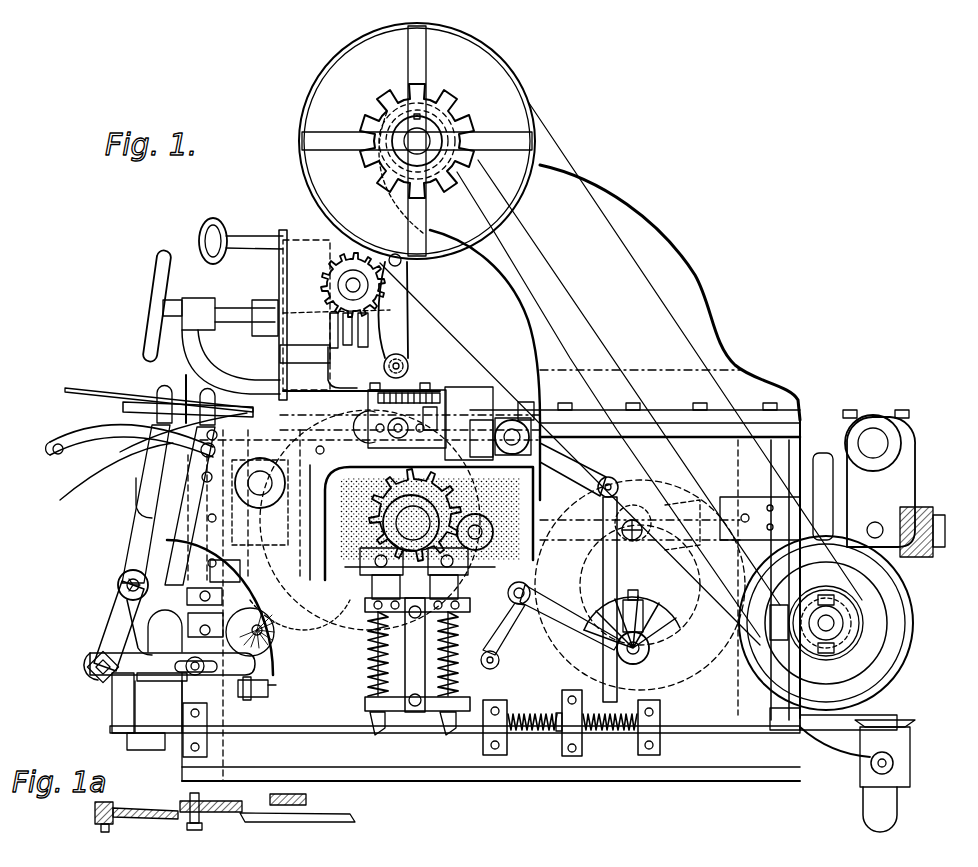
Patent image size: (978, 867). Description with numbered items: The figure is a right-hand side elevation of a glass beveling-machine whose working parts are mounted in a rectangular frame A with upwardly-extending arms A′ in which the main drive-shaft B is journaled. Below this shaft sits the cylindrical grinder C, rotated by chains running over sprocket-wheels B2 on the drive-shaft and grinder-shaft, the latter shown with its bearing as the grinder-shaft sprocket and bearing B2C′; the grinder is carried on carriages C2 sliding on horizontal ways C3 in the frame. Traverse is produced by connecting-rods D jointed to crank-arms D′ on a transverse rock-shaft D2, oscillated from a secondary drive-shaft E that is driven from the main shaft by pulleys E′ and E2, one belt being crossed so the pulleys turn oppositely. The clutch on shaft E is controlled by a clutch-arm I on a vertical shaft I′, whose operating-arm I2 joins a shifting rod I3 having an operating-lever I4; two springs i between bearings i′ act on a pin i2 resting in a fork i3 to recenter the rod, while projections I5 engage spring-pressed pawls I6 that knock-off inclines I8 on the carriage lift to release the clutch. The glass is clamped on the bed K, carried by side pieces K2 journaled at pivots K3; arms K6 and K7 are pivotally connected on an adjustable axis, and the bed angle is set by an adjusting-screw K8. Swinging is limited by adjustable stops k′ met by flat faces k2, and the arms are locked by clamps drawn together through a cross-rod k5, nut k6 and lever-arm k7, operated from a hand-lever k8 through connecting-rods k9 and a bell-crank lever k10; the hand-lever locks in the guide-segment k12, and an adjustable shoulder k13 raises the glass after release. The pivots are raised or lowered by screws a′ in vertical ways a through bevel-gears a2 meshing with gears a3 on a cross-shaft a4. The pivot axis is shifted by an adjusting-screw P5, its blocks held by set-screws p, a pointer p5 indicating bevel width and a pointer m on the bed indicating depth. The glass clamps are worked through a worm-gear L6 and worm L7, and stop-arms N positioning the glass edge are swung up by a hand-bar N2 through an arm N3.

In FIG. 1, the frame A is at (539, 575).
In FIG. 1, the upwardly-extending arms A′ is at (615, 332).
In FIG. 1, the main drive-shaft B is at (418, 140).
In FIG. 1, the sprocket-wheels B2 is at (440, 95).
In FIG. 1, the gear and eccentric B2C′ is at (431, 515).
In FIG. 1, the grinder C is at (455, 415).
In FIG. 1, the carriage C2 is at (365, 588).
In FIG. 1, the ways C3 is at (550, 615).
In FIG. 1, the connecting-rods D is at (421, 522).
In FIG. 1, the crank-arms D′ is at (879, 487).
In FIG. 1, the transverse rock-shaft D2 is at (873, 443).
In FIG. 1, the secondary drive-shaft E is at (850, 623).
In FIG. 1, the pulleys E′ is at (395, 100).
In FIG. 1, the pulleys E2 is at (530, 128).
In FIG. 1, the clutch-arm I is at (770, 620).
In FIG. 1, the vertical shaft I′ is at (455, 580).
In FIG. 1, the operating-arm I2 is at (795, 765).
In FIG. 1, the shifting rod I3 is at (722, 765).
In FIG. 1, the operating-lever I4 is at (173, 450).
In FIG. 1, the projections I5 is at (413, 734).
In FIG. 1, the spring-pressed pawls I6 is at (473, 683).
In FIG. 1, the knock-off projections I8 is at (192, 322).
In FIG. 1, the bed K is at (125, 408).
In FIG. 1, the side pieces K2 is at (244, 505).
In FIG. 1, the pivots K3 is at (135, 490).
In FIG. 1, the arms K6 is at (370, 442).
In FIG. 1, the arms K7 is at (530, 430).
In FIG. 1, the adjusting-screw K8 is at (120, 452).
In FIG. 1, the worm-gear L6 is at (390, 285).
In FIG. 1, the worm L7 is at (380, 320).
In FIG. 1, the stop-arms N is at (353, 315).
In FIG. 1, the hand-bar N2 is at (200, 232).
In FIG. 1, the arm N3 is at (395, 252).
In FIG. 1, the adjusting-screw P5 is at (448, 400).
In FIG. 1, the vertical ways a is at (215, 555).
In FIG. 1, the screws a′ is at (212, 572).
In FIG. 1, the bevel-gears a2 is at (190, 612).
In FIG. 1, the gears a3 is at (258, 660).
In FIG. 1, the cross-shaft a4 is at (300, 632).
In FIG. 1, the springs i is at (530, 735).
In FIG. 1, the bearings i′ is at (493, 758).
In FIG. 1, the pin i2 is at (560, 758).
In FIG. 1, the fork i3 is at (590, 702).
In FIG. 1, the adjustable stops k′ is at (262, 656).
In FIG. 1A, the adjustable stops k′ is at (308, 800).
In FIG. 1, the flat faces k2 is at (278, 688).
In FIG. 1A, the flat faces k2 is at (275, 794).
In FIG. 1, the cross-rod k5 is at (525, 396).
In FIG. 1, the nut k6 is at (535, 415).
In FIG. 1, the lever-arm k7 is at (585, 472).
In FIG. 1, the hand-lever k8 is at (140, 548).
In FIG. 1A, the hand-lever k8 is at (92, 813).
In FIG. 1, the connecting-rods k9 is at (105, 678).
In FIG. 1A, the connecting-rods k9 is at (145, 808).
In FIG. 1, the bell-crank lever k10 is at (560, 640).
In FIG. 1, the guide-segment k12 is at (50, 449).
In FIG. 1, the adjustable shoulder k13 is at (210, 676).
In FIG. 1A, the adjustable shoulder k13 is at (205, 800).
In FIG. 1, the pointer m is at (178, 390).
In FIG. 1, the post m′ is at (202, 397).
In FIG. 1, the set-screws p is at (360, 368).
In FIG. 1, the pointer p5 is at (410, 380).